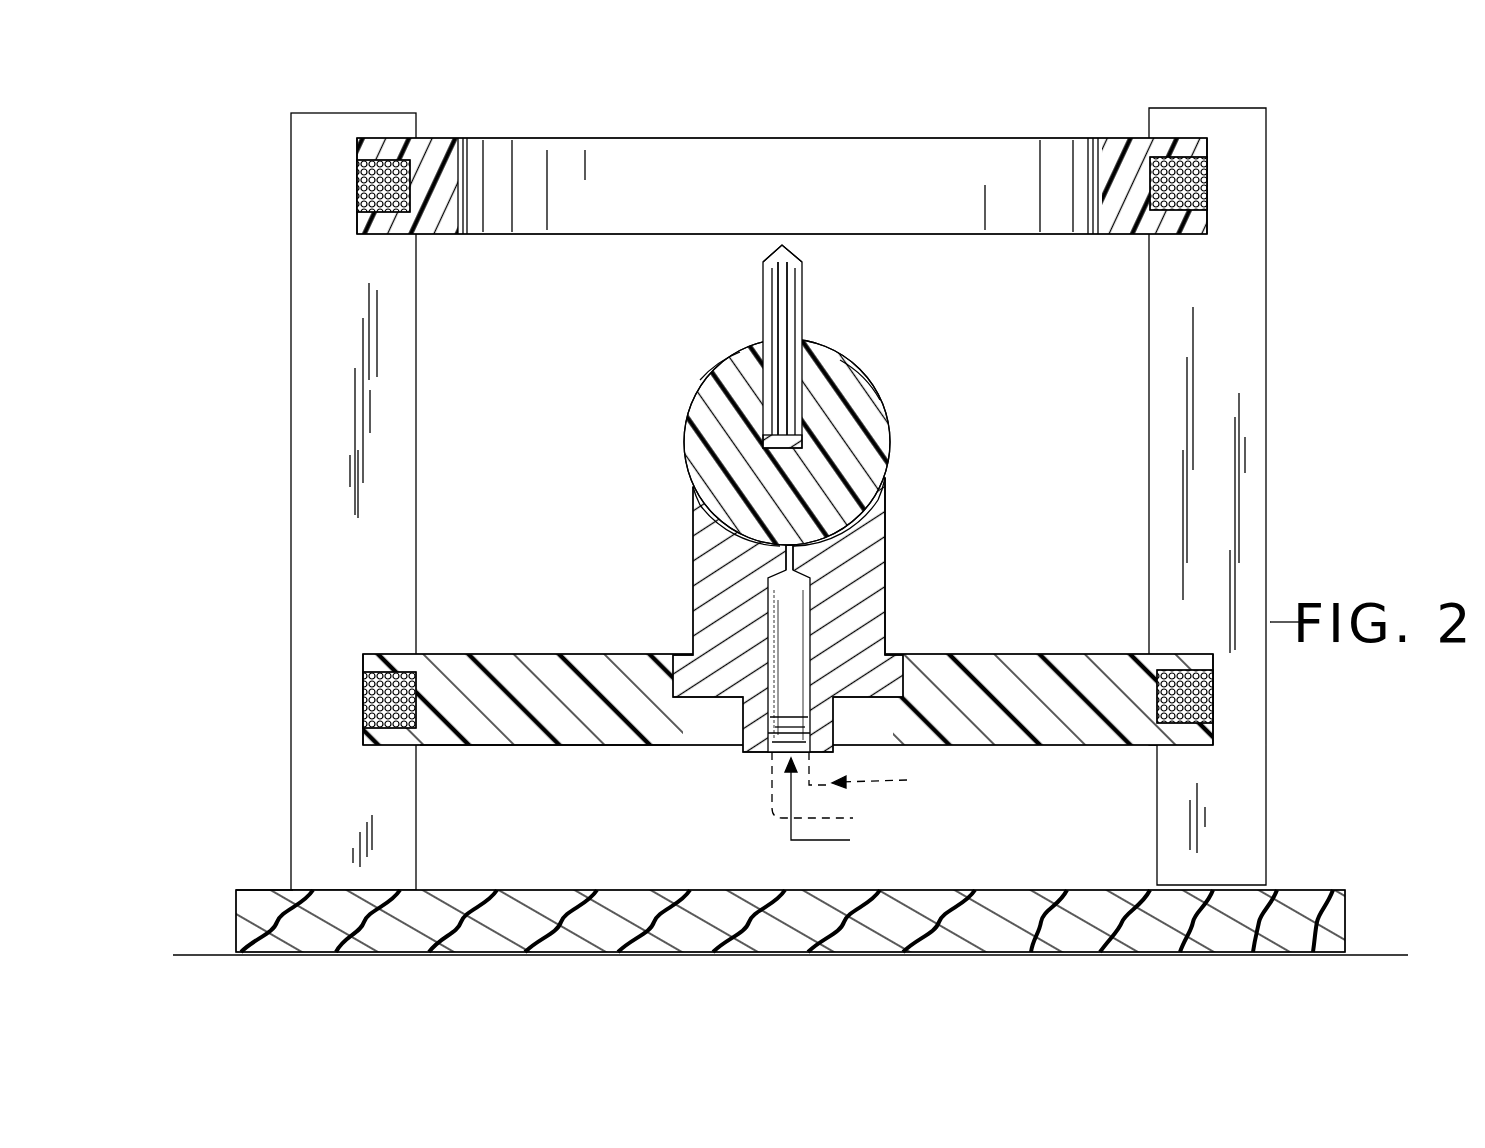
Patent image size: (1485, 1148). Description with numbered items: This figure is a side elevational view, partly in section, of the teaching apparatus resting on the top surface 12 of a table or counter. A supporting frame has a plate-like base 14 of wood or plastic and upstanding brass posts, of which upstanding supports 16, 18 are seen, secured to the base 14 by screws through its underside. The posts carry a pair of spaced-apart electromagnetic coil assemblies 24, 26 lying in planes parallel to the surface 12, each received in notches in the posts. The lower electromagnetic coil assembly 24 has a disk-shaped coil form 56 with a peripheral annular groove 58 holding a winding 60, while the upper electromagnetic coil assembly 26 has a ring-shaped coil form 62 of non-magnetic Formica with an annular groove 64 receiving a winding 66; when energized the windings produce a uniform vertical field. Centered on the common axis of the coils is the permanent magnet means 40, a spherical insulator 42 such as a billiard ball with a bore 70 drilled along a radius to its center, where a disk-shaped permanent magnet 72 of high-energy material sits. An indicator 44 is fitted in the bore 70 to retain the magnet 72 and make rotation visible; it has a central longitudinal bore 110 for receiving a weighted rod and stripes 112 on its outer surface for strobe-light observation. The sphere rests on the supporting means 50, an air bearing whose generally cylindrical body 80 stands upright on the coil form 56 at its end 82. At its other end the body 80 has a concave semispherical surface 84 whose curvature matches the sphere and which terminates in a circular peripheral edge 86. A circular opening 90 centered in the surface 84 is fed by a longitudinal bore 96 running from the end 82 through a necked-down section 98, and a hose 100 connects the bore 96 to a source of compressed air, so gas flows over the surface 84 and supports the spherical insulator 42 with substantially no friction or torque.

The top surface 12 is at (208, 950).
The base 14 is at (260, 880).
The upstanding support 16 is at (390, 450).
The upstanding support 18 is at (1165, 570).
The electromagnetic coil assembly 24 is at (780, 719).
The electromagnetic coil assembly 26 is at (778, 174).
The permanent magnet means 40 is at (751, 395).
The spherical insulator 42 is at (690, 412).
The indicator 44 is at (763, 312).
The supporting means 50 is at (749, 635).
The coil form 56 is at (597, 748).
The annular groove 58 is at (386, 732).
The winding 60 is at (350, 694).
The coil form 62 is at (436, 158).
The annular groove 64 is at (355, 147).
The winding 66 is at (350, 192).
The bore 70 is at (745, 368).
The permanent magnet 72 is at (860, 408).
The cylindrical body 80 is at (716, 586).
The end 82 is at (735, 710).
The surface 84 is at (835, 468).
The peripheral edge 86 is at (690, 487).
The opening 90 is at (787, 543).
The longitudinal bore 96 is at (817, 638).
The necked-down section 98 is at (803, 566).
The hose 100 is at (872, 796).
The central longitudinal bore 110 is at (780, 248).
The stripes 112 is at (780, 312).